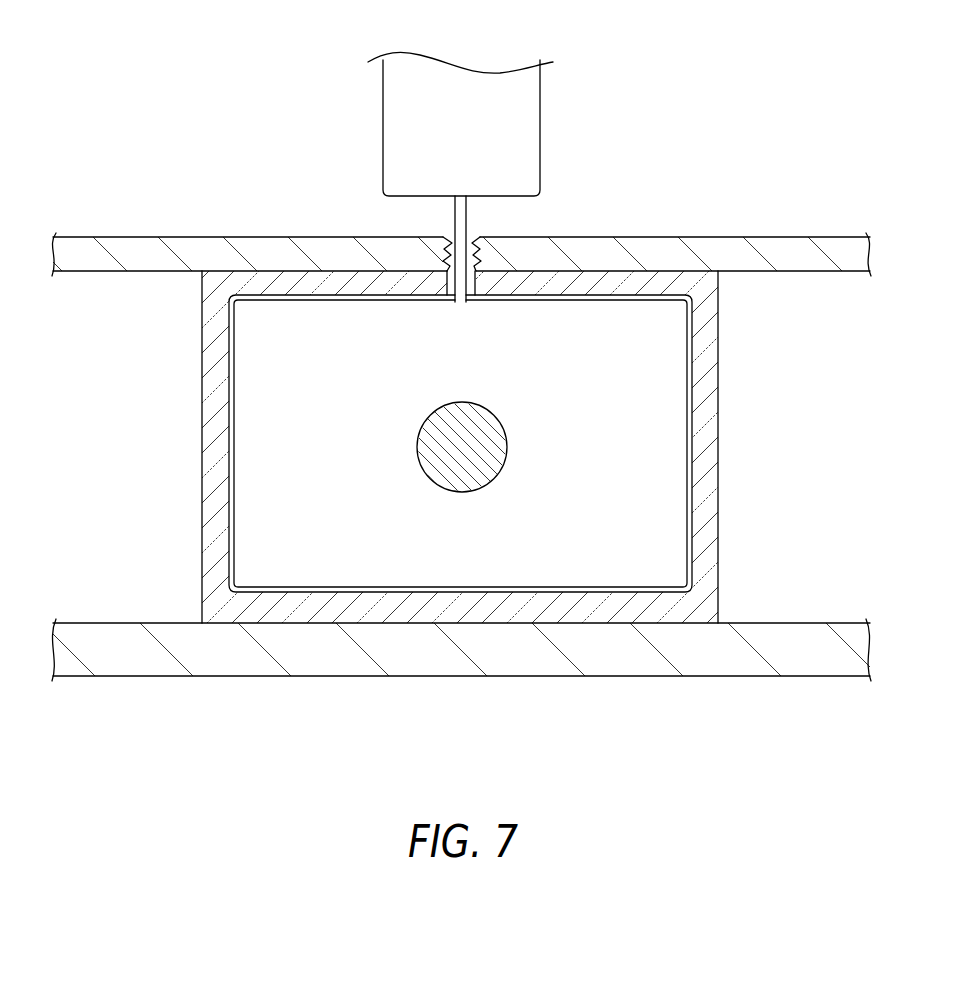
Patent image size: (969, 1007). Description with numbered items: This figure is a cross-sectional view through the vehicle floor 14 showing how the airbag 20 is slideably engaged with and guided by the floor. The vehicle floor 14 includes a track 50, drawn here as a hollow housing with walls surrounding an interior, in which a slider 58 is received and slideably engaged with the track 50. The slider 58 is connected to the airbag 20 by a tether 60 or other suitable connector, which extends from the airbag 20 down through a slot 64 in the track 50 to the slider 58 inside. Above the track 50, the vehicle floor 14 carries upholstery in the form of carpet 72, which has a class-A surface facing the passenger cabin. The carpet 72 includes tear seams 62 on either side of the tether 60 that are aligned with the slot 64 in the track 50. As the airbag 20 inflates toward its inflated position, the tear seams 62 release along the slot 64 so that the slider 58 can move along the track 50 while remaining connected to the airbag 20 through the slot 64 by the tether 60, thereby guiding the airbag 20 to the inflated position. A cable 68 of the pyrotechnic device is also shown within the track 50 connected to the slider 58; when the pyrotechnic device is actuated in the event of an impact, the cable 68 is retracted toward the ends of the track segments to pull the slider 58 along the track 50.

The vehicle floor 14 is at (222, 677).
The airbag 20 is at (403, 108).
The track 50 is at (217, 485).
The slider 58 is at (645, 437).
The tether 60 is at (468, 212).
The tear seams 62 is at (450, 243).
The slot 64 is at (474, 302).
The cable 68 is at (492, 478).
The carpet 72 is at (140, 237).